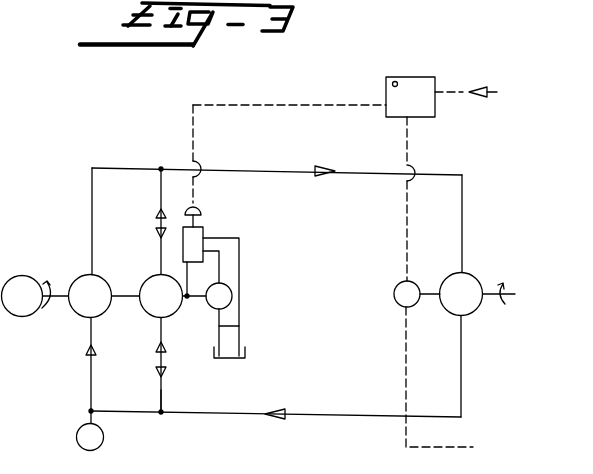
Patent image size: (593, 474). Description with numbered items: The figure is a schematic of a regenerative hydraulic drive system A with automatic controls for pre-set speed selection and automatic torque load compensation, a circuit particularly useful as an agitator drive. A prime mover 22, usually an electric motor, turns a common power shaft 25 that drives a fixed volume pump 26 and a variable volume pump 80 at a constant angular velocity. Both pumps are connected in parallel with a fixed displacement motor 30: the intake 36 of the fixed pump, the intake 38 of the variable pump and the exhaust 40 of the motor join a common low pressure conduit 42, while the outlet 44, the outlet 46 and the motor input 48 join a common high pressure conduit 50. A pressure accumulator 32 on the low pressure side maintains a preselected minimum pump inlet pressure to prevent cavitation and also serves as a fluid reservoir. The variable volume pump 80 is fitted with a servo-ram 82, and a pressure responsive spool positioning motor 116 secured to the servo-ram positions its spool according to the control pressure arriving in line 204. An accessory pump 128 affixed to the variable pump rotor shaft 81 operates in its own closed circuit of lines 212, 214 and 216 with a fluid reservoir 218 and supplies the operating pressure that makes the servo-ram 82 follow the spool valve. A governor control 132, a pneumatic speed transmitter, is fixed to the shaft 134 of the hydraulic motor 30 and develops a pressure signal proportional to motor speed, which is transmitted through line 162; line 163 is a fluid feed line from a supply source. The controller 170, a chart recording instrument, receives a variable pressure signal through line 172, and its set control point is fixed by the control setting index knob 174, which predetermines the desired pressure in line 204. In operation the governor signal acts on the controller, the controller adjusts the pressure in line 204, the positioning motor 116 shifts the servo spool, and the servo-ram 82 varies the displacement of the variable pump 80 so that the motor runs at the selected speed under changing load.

The fuel control system A is at (416, 13).
The prime mover 22 is at (23, 275).
The common power shaft 25 is at (55, 303).
The fixed volume pump 26 is at (100, 318).
The fixed displacement motor 30 is at (477, 280).
The pressure accumulator 32 is at (100, 444).
The intake of pump 26 36 is at (91, 383).
The intake of pump 38 is at (160, 383).
The exhaust of motor 30 40 is at (462, 368).
The common conduit 42 is at (302, 410).
The outlet of pump 26 44 is at (92, 212).
The outlet of pump 46 is at (160, 215).
The input of motor 30 48 is at (463, 217).
The common conduit 50 is at (258, 172).
The variable volume pump 80 is at (164, 332).
The variable pump rotor shaft 81 is at (197, 305).
The servo-ram 82 is at (200, 236).
The pressure responsive spool positioning motor 116 is at (201, 208).
The accessory pump 128 is at (232, 296).
The governor control 132 is at (394, 290).
The shaft of hydraulic motor 134 is at (430, 290).
The line 162 is at (409, 210).
The fluid feed line 163 is at (407, 338).
The controller 170 is at (420, 78).
The line 172 is at (461, 91).
The control setting index knob 174 is at (386, 83).
The line 204 is at (268, 108).
The line 212 is at (222, 263).
The line 214 is at (240, 250).
The line 216 is at (240, 326).
The fluid reservoir 218 is at (233, 358).